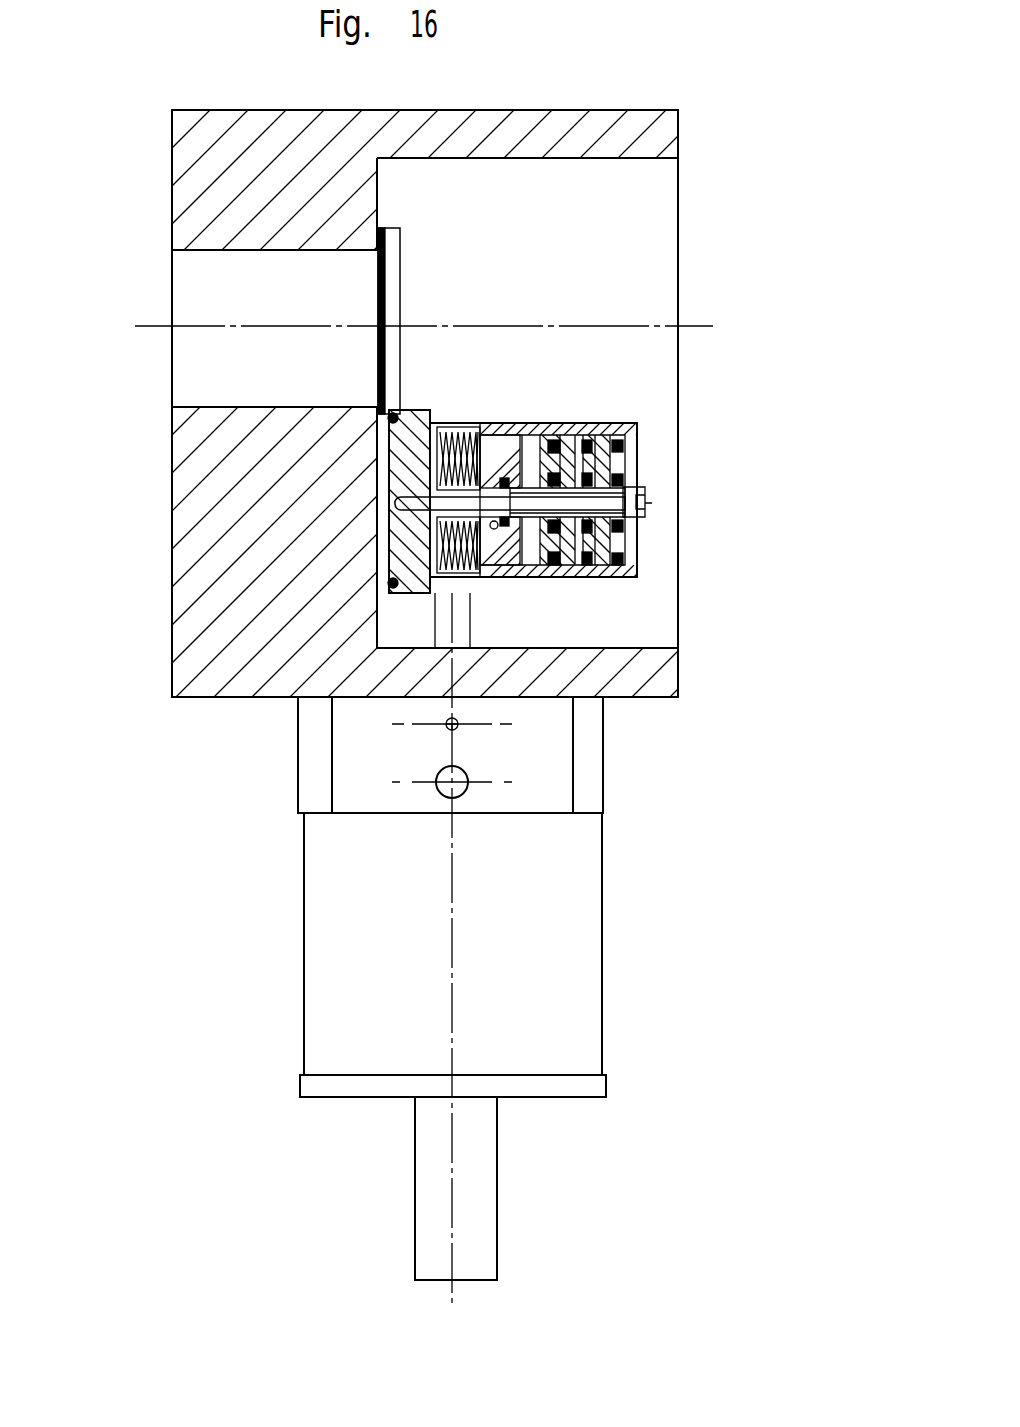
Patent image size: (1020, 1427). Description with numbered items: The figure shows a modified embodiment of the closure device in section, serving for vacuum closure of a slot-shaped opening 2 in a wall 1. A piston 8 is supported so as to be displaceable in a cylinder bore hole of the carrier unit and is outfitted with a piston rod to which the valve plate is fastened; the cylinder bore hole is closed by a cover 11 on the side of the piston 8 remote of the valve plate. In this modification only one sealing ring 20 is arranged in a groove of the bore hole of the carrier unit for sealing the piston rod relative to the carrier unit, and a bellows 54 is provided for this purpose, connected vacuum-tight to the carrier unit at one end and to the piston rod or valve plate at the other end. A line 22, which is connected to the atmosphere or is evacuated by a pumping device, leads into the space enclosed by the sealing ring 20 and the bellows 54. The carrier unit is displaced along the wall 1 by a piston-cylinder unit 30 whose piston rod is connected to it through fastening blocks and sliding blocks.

The wall 1 is at (236, 498).
The opening 2 is at (218, 357).
The piston 8 is at (612, 532).
The cover 11 is at (610, 465).
The sealing ring 20 is at (515, 425).
The line 22 is at (492, 530).
The piston-cylinder unit 30 is at (662, 933).
The bellows 54 is at (462, 425).